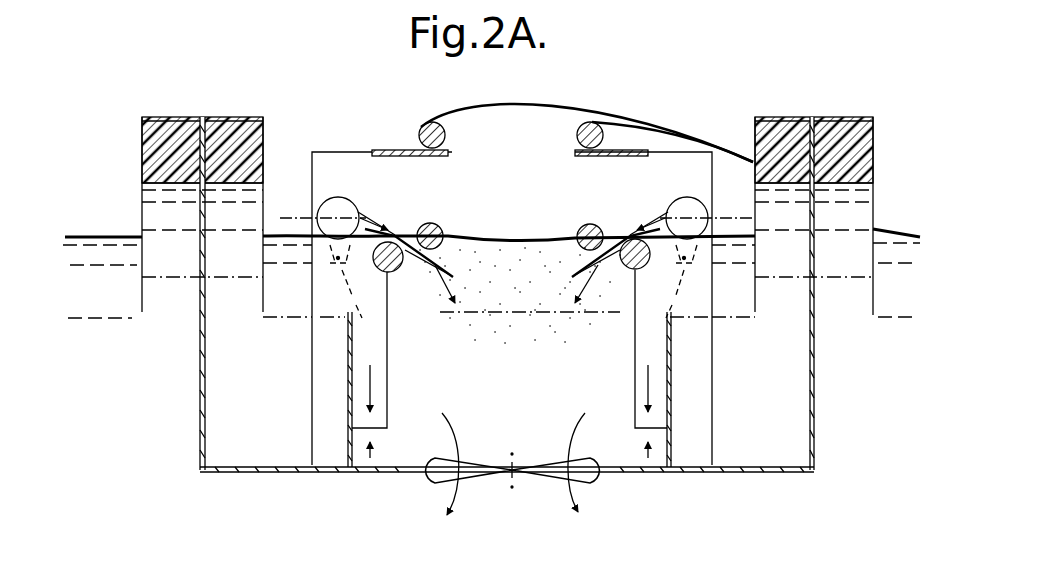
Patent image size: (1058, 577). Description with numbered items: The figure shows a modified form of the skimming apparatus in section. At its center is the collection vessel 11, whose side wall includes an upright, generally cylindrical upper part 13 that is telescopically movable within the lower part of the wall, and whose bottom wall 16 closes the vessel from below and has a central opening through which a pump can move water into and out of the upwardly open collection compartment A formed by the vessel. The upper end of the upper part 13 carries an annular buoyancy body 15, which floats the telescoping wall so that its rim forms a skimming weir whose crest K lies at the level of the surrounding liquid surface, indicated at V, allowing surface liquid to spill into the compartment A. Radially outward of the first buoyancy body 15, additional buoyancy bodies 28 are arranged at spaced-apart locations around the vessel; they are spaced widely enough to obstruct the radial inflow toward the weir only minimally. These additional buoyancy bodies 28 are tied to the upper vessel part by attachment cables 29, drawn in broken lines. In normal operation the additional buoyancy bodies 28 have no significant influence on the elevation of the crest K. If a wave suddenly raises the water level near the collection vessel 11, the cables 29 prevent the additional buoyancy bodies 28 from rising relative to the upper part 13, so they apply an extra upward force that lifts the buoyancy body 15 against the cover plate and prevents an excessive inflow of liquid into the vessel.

The collection vessel 11 is at (345, 392).
The upper part 13 is at (385, 350).
The buoyancy body 15 is at (406, 270).
The bottom wall 16 is at (358, 472).
The additional buoyancy bodies 28 is at (342, 210).
The attachment cables 29 is at (345, 285).
The collection compartment A is at (513, 455).
The crest K is at (395, 233).
The liquid level V is at (277, 234).